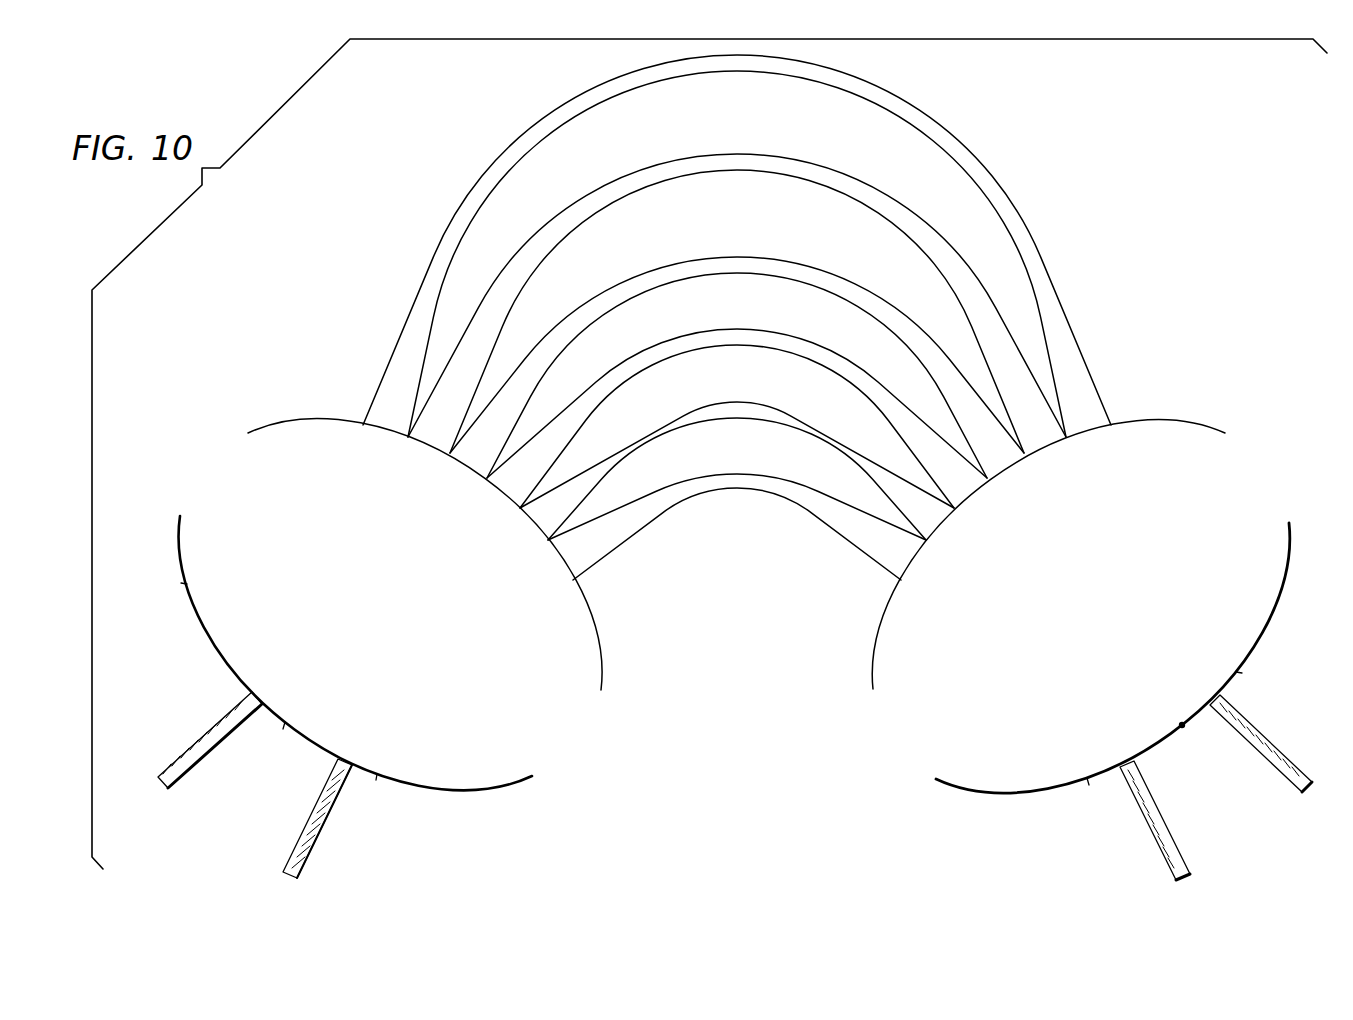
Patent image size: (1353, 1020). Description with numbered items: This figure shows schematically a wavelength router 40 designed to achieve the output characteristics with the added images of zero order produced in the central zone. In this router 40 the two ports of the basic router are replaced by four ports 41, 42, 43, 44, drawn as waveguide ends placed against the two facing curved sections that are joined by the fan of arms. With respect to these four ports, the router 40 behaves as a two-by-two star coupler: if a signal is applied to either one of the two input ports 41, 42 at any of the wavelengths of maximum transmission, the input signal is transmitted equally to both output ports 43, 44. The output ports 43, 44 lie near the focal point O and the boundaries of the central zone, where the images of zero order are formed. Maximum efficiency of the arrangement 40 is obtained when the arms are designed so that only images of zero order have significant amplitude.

The router 40 is at (751, 746).
The input port 41 is at (216, 750).
The input port 42 is at (325, 822).
The output port 43 is at (1298, 776).
The output port 44 is at (1166, 830).